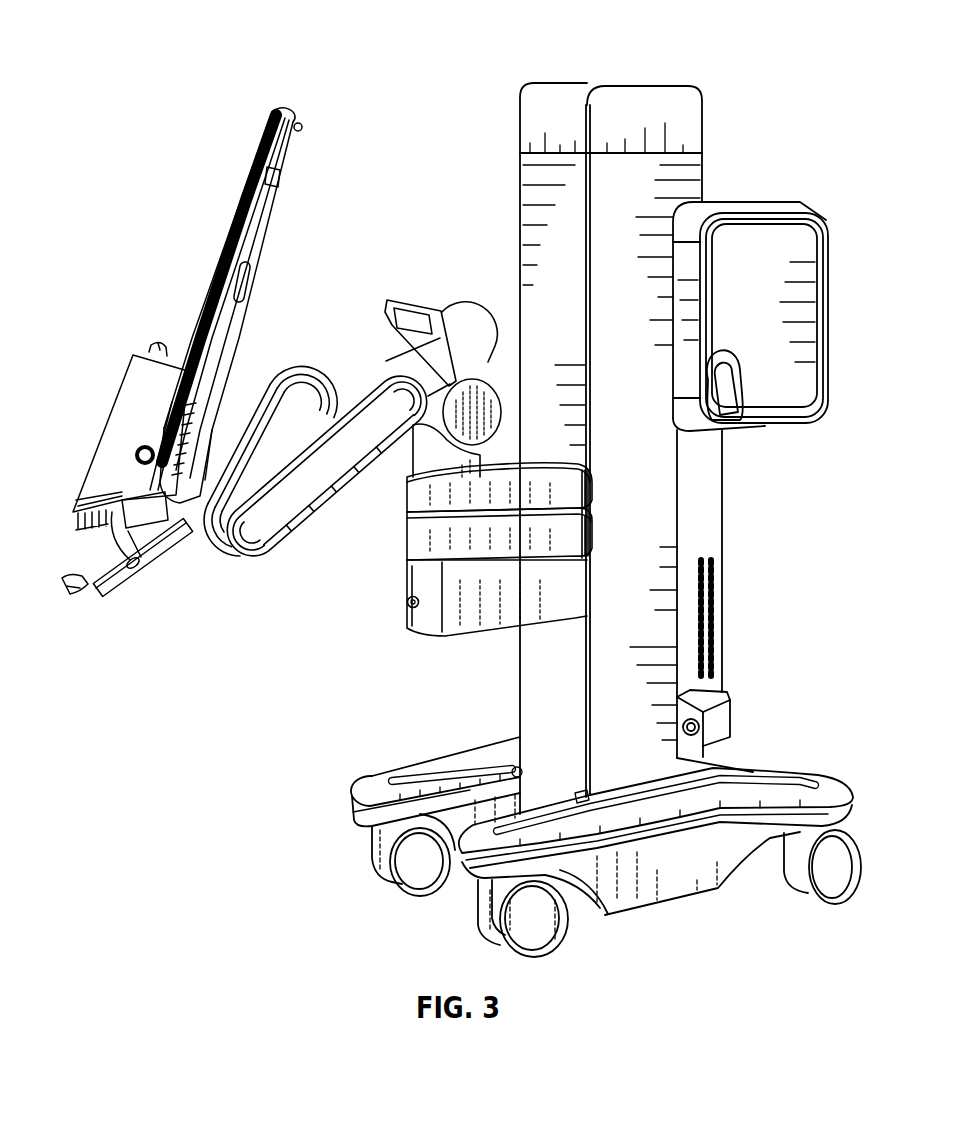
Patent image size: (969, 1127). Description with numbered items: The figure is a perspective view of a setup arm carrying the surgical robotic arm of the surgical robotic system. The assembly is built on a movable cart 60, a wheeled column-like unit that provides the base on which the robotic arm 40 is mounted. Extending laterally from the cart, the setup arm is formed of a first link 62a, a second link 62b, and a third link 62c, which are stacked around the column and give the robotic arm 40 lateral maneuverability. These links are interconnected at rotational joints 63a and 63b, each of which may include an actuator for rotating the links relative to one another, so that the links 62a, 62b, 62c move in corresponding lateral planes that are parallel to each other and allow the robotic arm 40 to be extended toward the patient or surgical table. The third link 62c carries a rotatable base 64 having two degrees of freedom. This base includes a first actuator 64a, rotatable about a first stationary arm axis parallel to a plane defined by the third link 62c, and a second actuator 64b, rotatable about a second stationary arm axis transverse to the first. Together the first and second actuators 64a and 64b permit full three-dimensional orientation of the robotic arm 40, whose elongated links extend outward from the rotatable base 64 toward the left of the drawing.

The movable cart 60 is at (633, 82).
The robotic arm 40 is at (319, 372).
The rotatable base 64 is at (505, 328).
The first actuator 64a is at (487, 398).
The second actuator 64b is at (423, 481).
The first link 62a is at (518, 597).
The second link 62b is at (417, 548).
The third link 62c is at (411, 503).
The rotational joint 63a is at (410, 583).
The rotational joint 63b is at (582, 487).